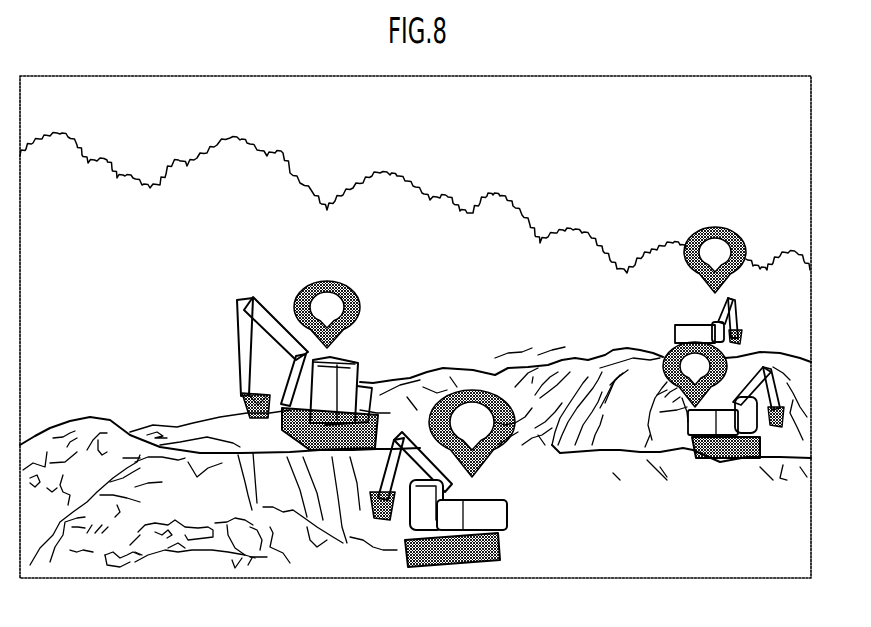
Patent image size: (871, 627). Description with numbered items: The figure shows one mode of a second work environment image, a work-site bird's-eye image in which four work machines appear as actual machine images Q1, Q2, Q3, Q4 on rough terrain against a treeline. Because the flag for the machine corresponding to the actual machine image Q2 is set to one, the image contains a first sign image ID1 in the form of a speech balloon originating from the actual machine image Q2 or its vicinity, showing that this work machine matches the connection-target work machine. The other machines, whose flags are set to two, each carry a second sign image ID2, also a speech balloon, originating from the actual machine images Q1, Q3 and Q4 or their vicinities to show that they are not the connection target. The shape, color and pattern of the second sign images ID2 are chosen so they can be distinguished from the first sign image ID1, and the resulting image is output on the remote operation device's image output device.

The first sign image ID1 is at (490, 377).
The second sign image ID2 is at (343, 278).
The actual machine image Q1 is at (762, 357).
The actual machine image Q2 is at (493, 475).
The actual machine image Q3 is at (357, 349).
The actual machine image Q4 is at (690, 310).